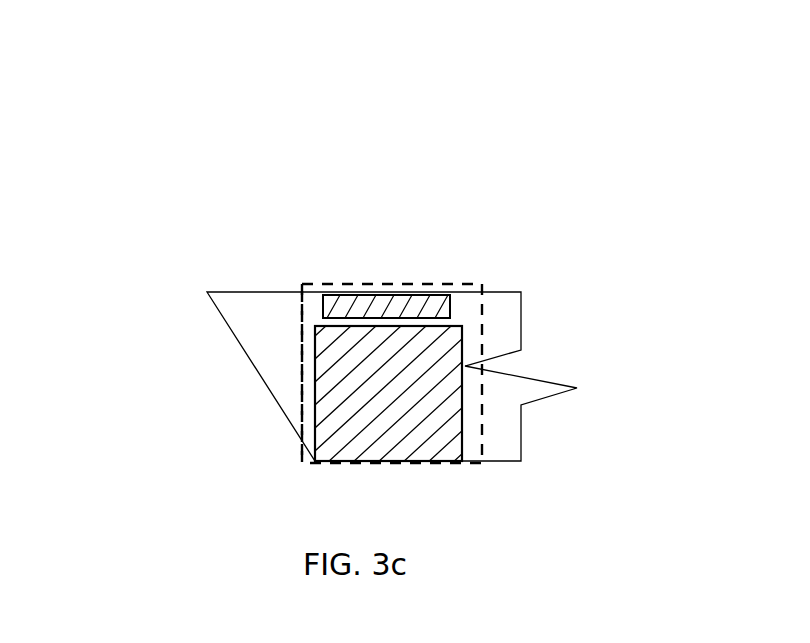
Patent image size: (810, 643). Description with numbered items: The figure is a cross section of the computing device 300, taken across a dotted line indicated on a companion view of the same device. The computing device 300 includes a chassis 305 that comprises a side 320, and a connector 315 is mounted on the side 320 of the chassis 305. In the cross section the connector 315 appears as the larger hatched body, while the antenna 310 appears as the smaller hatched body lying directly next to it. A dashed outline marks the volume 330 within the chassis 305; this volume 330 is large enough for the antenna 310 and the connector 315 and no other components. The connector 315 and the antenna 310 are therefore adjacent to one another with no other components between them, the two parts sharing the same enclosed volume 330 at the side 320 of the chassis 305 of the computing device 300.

The computing device 300 is at (355, 152).
The chassis 305 is at (492, 290).
The antenna 310 is at (322, 300).
The connector 315 is at (315, 408).
The side 320 is at (242, 357).
The volume 330 is at (300, 385).